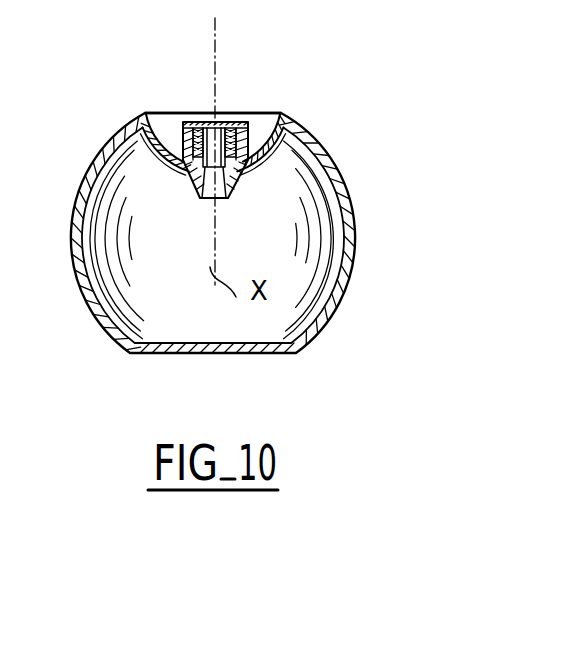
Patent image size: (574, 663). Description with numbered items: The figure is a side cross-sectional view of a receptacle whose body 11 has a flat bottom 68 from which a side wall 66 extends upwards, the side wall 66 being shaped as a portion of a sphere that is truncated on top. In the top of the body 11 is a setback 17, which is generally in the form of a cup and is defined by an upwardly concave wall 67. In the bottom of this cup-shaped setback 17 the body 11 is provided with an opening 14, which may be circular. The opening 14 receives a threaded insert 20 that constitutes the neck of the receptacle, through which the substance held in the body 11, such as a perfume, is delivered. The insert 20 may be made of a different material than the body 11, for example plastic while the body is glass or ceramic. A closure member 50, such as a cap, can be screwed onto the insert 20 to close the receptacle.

The body 11 is at (74, 268).
The opening 14 is at (228, 174).
The setback 17 is at (164, 126).
The insert 20 is at (182, 183).
The closure member 50 is at (221, 117).
The side wall 66 is at (355, 243).
The upwardly concave wall 67 is at (162, 153).
The flat bottom 68 is at (254, 343).